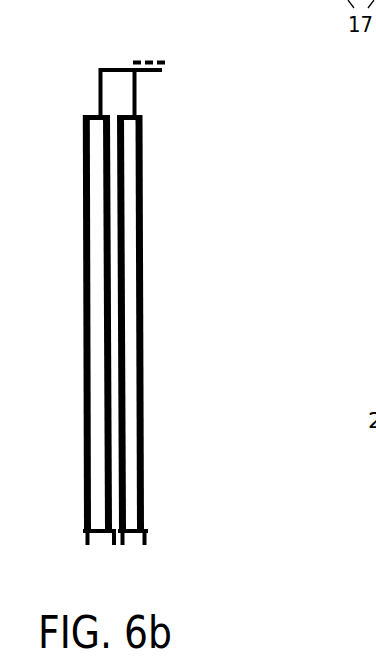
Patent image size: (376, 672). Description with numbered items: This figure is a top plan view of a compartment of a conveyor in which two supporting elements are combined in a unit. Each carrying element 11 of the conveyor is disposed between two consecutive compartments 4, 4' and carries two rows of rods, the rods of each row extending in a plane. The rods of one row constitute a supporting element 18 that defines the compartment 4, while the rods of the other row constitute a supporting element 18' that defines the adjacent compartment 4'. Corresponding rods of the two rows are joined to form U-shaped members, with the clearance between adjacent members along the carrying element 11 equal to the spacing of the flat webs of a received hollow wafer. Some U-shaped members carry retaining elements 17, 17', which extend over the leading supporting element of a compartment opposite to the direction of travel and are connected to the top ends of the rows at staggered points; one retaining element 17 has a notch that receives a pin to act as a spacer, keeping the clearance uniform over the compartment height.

The compartment 4 is at (110, 222).
The adjacent compartment 4' is at (160, 153).
The retaining element 17 is at (118, 63).
The retaining element 17' is at (176, 41).
The supporting element 18 is at (103, 322).
The supporting element 18' is at (156, 322).
The carrying element 11 is at (87, 540).